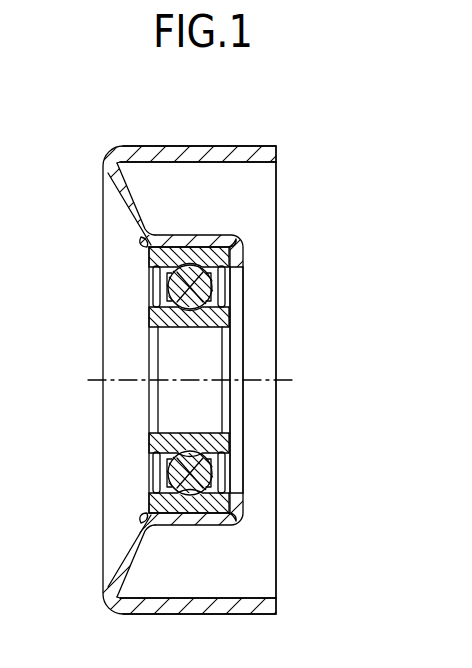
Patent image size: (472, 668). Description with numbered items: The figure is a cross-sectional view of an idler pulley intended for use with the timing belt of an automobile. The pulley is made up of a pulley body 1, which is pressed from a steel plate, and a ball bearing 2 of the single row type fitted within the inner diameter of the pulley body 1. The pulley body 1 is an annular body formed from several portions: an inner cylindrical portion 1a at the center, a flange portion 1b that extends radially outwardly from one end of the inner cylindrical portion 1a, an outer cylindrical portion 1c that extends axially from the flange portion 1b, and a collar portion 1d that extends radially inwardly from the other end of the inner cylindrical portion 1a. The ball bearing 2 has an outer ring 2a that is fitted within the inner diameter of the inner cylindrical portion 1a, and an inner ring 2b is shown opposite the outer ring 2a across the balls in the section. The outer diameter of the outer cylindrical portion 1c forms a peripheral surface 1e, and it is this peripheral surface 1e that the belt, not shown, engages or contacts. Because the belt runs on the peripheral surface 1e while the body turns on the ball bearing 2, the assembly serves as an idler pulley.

The pulley body 1 is at (287, 146).
The inner cylindrical portion 1a is at (205, 238).
The flange portion 1b is at (125, 201).
The outer cylindrical portion 1c is at (177, 146).
The collar portion 1d is at (240, 261).
The peripheral surface 1e is at (231, 146).
The ball bearing 2 is at (194, 380).
The outer ring 2a is at (150, 253).
The inner ring 2b is at (150, 322).